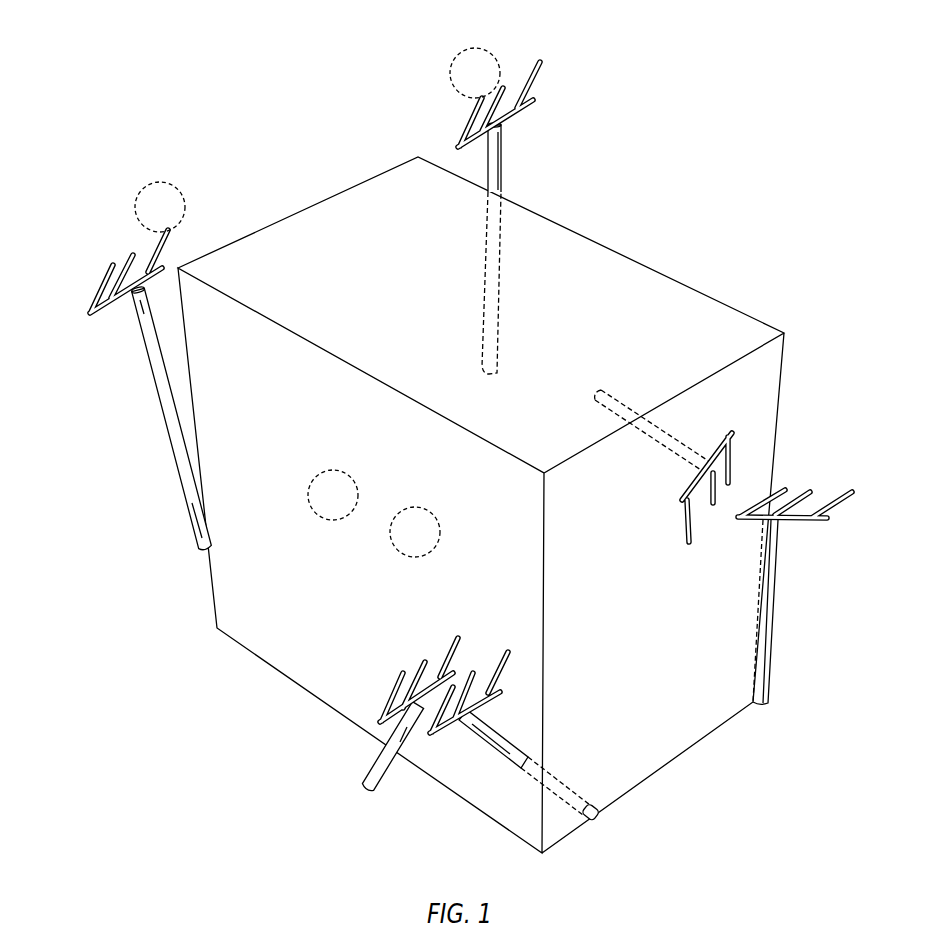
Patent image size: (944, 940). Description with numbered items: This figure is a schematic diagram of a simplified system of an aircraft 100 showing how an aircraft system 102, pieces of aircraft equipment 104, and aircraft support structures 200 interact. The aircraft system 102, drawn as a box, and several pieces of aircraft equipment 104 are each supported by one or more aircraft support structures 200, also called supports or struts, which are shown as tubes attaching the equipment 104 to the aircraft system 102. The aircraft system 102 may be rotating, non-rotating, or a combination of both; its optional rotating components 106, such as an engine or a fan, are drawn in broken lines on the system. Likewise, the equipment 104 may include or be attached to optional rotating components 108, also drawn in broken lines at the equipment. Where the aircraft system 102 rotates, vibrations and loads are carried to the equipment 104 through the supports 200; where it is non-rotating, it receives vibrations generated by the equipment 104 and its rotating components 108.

The aircraft 100 is at (232, 97).
The aircraft system 102 is at (379, 204).
The aircraft equipment 104 is at (97, 297).
The rotating components 106 is at (327, 518).
The rotating components 108 is at (153, 183).
The aircraft support structures 200 is at (160, 429).